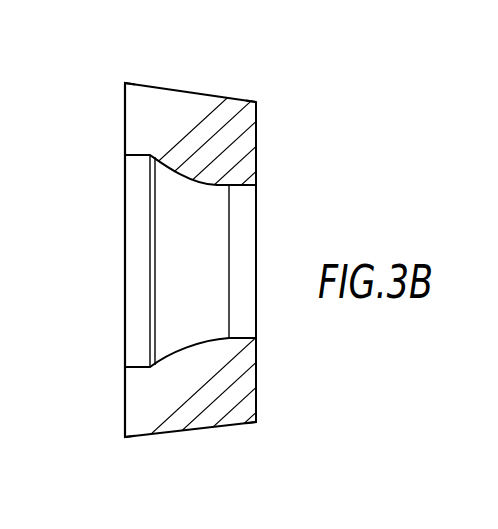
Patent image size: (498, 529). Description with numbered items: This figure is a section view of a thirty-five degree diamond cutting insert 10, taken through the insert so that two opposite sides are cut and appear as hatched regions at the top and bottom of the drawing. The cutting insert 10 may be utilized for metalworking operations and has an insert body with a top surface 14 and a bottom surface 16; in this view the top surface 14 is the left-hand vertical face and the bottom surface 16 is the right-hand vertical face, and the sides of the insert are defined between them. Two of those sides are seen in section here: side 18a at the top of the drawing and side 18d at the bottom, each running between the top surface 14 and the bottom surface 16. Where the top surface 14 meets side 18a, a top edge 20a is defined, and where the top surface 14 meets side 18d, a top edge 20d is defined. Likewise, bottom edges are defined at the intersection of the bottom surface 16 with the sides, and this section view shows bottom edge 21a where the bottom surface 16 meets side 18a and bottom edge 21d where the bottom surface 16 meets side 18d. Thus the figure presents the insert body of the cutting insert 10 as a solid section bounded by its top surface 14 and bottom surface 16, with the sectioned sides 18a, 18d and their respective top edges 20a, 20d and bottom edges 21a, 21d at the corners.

The cutting insert 10 is at (257, 131).
The top surface 14 is at (125, 118).
The bottom surface 16 is at (257, 165).
The side 18a is at (175, 87).
The side 18d is at (205, 428).
The top edge 20a is at (125, 83).
The top edge 20d is at (125, 437).
The bottom edge 21a is at (257, 102).
The bottom edge 21d is at (256, 422).